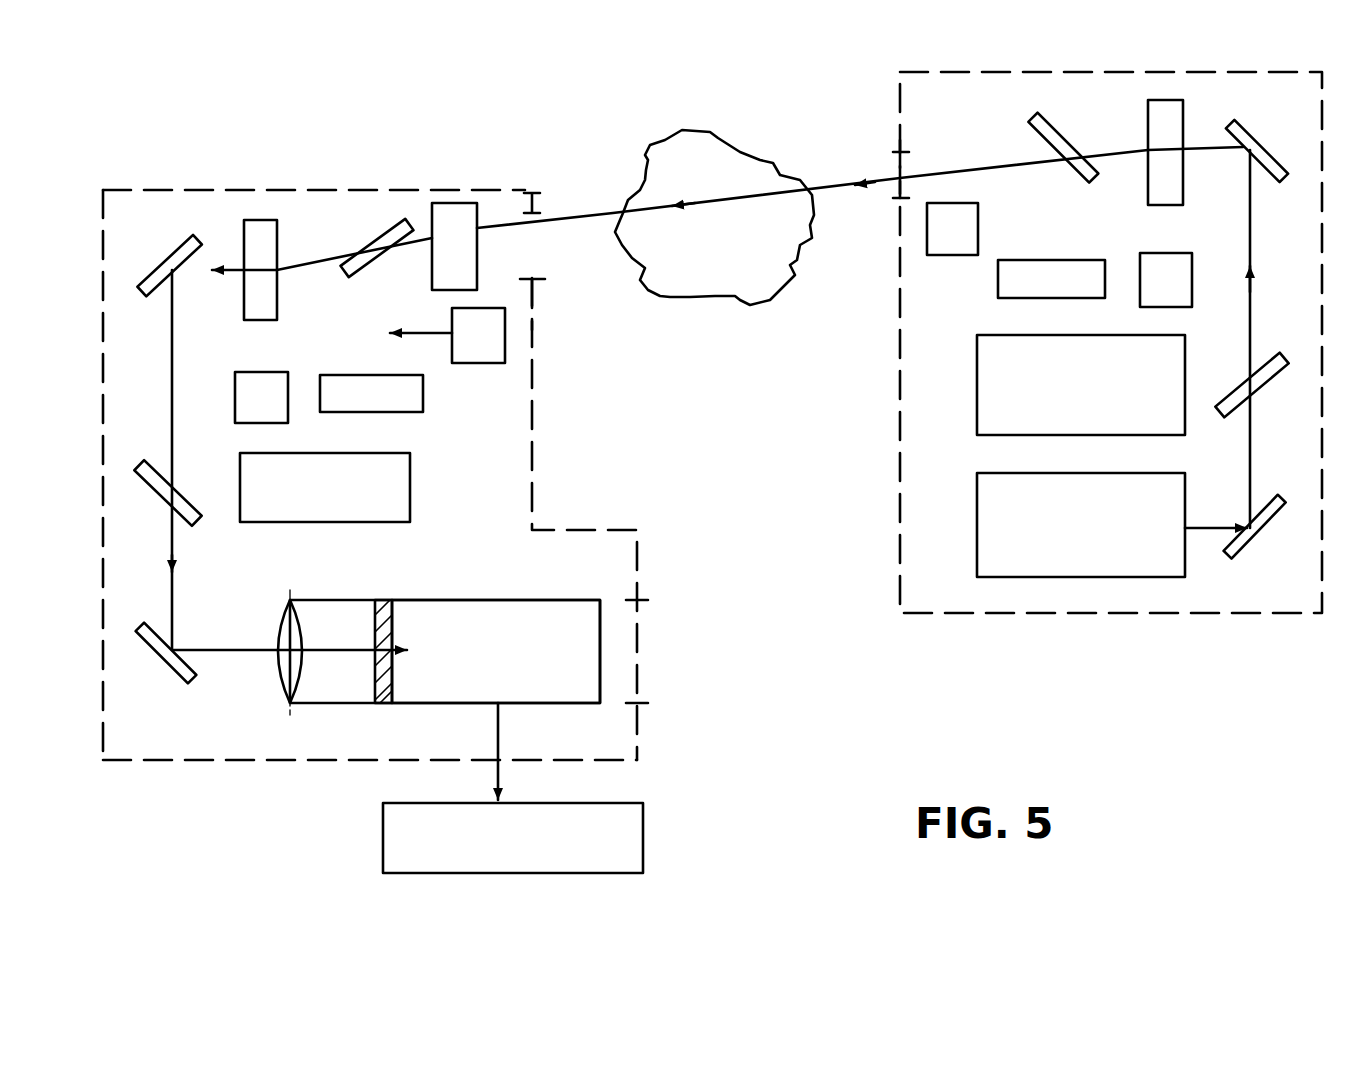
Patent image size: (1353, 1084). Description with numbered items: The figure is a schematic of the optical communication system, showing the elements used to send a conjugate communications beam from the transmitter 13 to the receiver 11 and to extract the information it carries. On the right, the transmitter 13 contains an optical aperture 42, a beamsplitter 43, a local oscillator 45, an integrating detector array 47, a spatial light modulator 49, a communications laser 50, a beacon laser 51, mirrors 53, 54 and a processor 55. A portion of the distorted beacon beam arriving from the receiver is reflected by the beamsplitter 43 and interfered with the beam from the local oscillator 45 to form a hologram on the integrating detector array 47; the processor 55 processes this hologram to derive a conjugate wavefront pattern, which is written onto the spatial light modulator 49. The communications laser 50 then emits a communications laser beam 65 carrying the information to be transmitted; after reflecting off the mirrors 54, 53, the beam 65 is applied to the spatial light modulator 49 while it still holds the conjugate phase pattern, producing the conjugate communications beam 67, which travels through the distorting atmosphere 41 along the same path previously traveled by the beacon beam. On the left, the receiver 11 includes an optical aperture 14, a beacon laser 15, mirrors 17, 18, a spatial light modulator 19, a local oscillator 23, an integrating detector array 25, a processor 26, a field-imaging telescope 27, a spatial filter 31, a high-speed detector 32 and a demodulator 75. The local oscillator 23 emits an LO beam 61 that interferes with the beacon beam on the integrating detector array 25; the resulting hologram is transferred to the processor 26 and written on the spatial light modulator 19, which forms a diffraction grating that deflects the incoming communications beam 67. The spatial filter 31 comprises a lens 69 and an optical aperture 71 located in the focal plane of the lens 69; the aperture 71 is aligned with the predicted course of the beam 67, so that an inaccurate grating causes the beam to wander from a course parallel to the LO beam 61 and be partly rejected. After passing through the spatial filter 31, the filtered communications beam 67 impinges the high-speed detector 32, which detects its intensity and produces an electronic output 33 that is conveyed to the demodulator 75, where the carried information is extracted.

The receiver 11 is at (534, 492).
The transmitter 13 is at (898, 380).
The optical aperture 14 is at (538, 270).
The beacon laser 15 is at (412, 490).
The mirror 17 is at (170, 254).
The mirror 18 is at (162, 676).
The spatial light modulator 19 is at (280, 237).
The local oscillator 23 is at (496, 350).
The integrating detector array 25 is at (423, 395).
The processor 26 is at (278, 411).
The field-imaging telescope 27 is at (450, 203).
The spatial filter 31 is at (322, 600).
The high-speed detector 32 is at (455, 600).
The electronic output 33 is at (503, 738).
The distorting atmosphere 41 is at (734, 278).
The optical aperture 42 is at (892, 162).
The beamsplitter 43 is at (1030, 118).
The local oscillator 45 is at (968, 244).
The integrating detector array 47 is at (1012, 298).
The spatial light modulator 49 is at (1148, 122).
The communications laser 50 is at (977, 532).
The beacon laser 51 is at (977, 398).
The mirror 53 is at (1258, 138).
The mirror 54 is at (1258, 565).
The processor 55 is at (1181, 296).
The LO beam 61 is at (425, 340).
The communications laser beam 65 is at (1256, 252).
The conjugate communications beam 67 is at (605, 222).
The lens 69 is at (285, 690).
The optical aperture 71 is at (366, 662).
The demodulator 75 is at (383, 843).